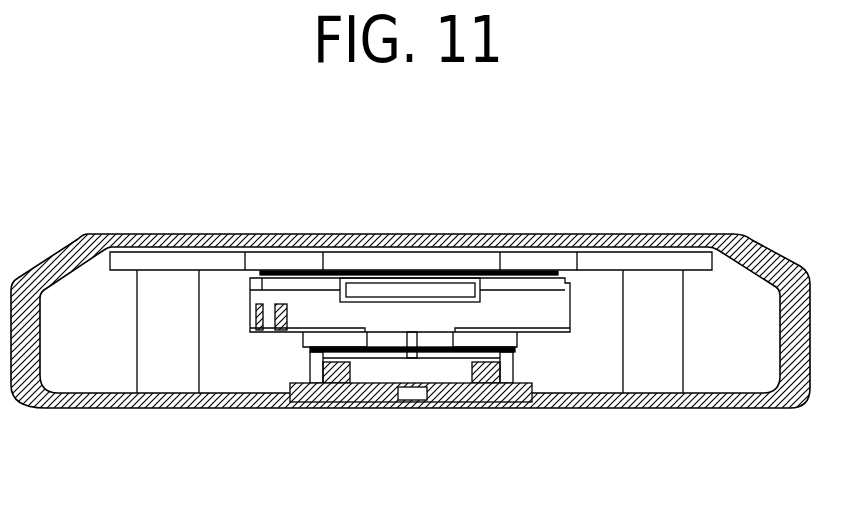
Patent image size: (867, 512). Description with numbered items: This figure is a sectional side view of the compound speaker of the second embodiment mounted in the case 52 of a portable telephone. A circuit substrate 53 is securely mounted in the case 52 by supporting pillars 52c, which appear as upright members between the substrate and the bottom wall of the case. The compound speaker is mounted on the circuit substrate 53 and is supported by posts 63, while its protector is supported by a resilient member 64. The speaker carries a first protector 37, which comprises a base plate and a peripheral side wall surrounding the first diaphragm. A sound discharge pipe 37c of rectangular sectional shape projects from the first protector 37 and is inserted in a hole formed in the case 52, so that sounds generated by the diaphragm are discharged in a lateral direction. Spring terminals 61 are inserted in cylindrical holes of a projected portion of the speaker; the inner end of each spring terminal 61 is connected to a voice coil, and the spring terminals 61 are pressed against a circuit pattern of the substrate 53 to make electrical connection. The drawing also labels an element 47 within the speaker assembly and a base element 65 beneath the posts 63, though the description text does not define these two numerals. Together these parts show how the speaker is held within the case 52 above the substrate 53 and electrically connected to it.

The first protector 37 is at (440, 288).
The sound discharge pipe 37c is at (400, 303).
The magnet 47 is at (292, 272).
The case 52 is at (46, 408).
The supporting pillars 52c is at (163, 358).
The circuit substrate 53 is at (188, 262).
The spring terminal 61 is at (657, 266).
The posts 63 is at (507, 363).
The resilient member 64 is at (336, 378).
The base 65 is at (470, 405).